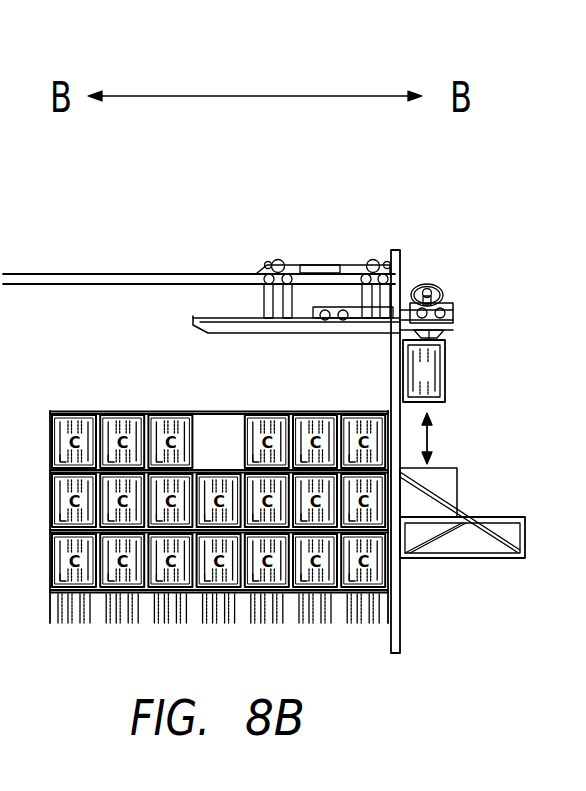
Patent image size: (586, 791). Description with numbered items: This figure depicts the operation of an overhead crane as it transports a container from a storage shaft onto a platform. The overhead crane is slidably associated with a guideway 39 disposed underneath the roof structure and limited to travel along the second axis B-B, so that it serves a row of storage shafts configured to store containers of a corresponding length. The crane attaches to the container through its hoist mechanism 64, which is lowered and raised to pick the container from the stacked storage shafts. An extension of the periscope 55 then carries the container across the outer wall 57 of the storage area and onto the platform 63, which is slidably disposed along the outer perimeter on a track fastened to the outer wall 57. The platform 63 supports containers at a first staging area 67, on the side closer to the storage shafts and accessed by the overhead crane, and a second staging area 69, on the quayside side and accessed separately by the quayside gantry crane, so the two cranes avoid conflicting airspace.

The guideway 39 is at (219, 273).
The outer wall 57 is at (401, 252).
The periscope 55 is at (455, 320).
The hoist mechanism 64 is at (440, 333).
The first staging area 67 is at (460, 457).
The second staging area 69 is at (507, 496).
The platform 63 is at (527, 555).